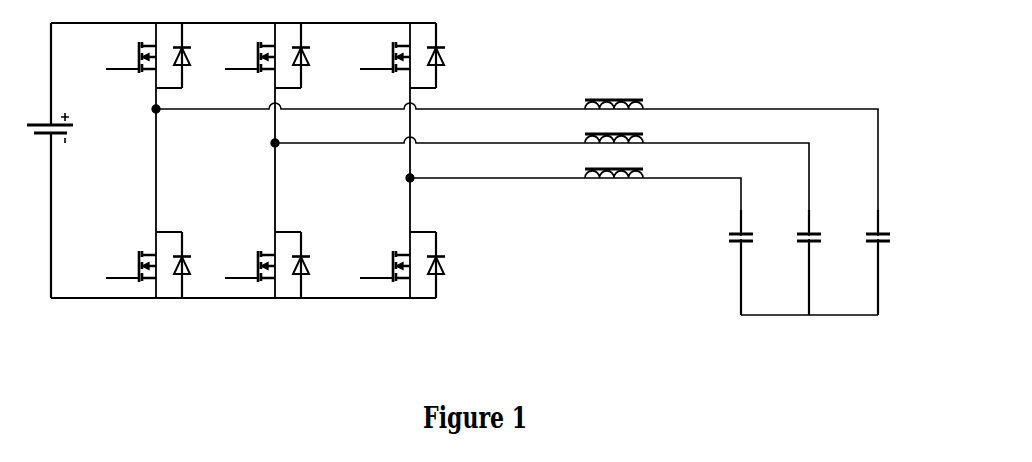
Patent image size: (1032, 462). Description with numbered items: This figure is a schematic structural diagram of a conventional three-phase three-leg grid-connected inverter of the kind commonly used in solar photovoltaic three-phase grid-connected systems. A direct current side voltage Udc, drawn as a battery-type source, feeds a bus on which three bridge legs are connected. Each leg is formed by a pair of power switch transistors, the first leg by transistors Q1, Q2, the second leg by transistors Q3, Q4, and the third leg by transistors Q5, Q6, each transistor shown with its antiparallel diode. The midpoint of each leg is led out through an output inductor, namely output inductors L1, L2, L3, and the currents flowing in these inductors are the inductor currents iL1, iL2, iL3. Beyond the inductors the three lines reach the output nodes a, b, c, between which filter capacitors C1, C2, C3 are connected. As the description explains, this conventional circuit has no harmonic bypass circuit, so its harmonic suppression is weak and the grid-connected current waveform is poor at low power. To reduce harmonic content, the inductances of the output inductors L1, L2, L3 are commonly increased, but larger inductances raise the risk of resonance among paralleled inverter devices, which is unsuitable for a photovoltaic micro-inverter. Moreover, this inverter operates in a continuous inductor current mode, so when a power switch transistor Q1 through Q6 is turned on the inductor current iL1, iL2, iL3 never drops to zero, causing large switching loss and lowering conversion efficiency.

The power switch transistor Q1 is at (141, 55).
The power switch transistor Q2 is at (141, 265).
The power switch transistor Q3 is at (261, 55).
The power switch transistor Q4 is at (262, 265).
The power switch transistor Q5 is at (397, 55).
The power switch transistor Q6 is at (397, 265).
The voltage at direct current side Udc is at (72, 135).
The output inductor L1 is at (614, 90).
The output inductor L2 is at (614, 127).
The output inductor L3 is at (614, 161).
The inductor current iL1 is at (691, 92).
The inductor current iL2 is at (691, 123).
The inductor current iL3 is at (691, 158).
The phase-a filter capacitor C1 is at (894, 262).
The phase-b filter capacitor C2 is at (824, 262).
The phase-c filter capacitor C3 is at (757, 262).
The output terminal a is at (894, 107).
The output terminal b is at (827, 143).
The output terminal c is at (754, 171).